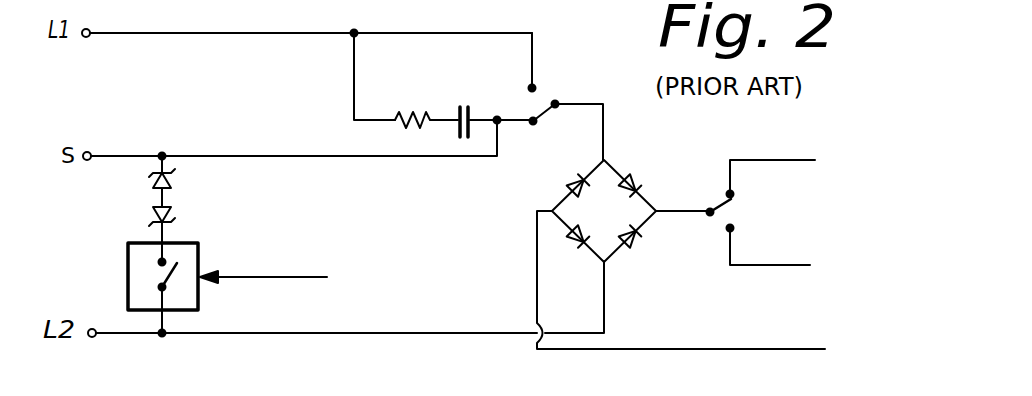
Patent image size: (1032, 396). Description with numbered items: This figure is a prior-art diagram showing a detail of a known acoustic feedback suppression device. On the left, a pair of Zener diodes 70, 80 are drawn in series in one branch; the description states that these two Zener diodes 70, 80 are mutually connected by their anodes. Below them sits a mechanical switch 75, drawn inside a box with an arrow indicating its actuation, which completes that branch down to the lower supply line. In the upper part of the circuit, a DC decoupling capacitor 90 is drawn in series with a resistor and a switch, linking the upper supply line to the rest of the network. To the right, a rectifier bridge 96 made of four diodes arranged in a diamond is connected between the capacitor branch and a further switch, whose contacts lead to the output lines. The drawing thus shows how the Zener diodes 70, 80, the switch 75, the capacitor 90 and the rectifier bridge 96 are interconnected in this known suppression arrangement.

The Zener diode 70 is at (174, 185).
The mechanical switch 75 is at (193, 261).
The Zener diode 80 is at (152, 210).
The DC decoupling capacitor 90 is at (470, 110).
The rectifier bridge 96 is at (642, 171).